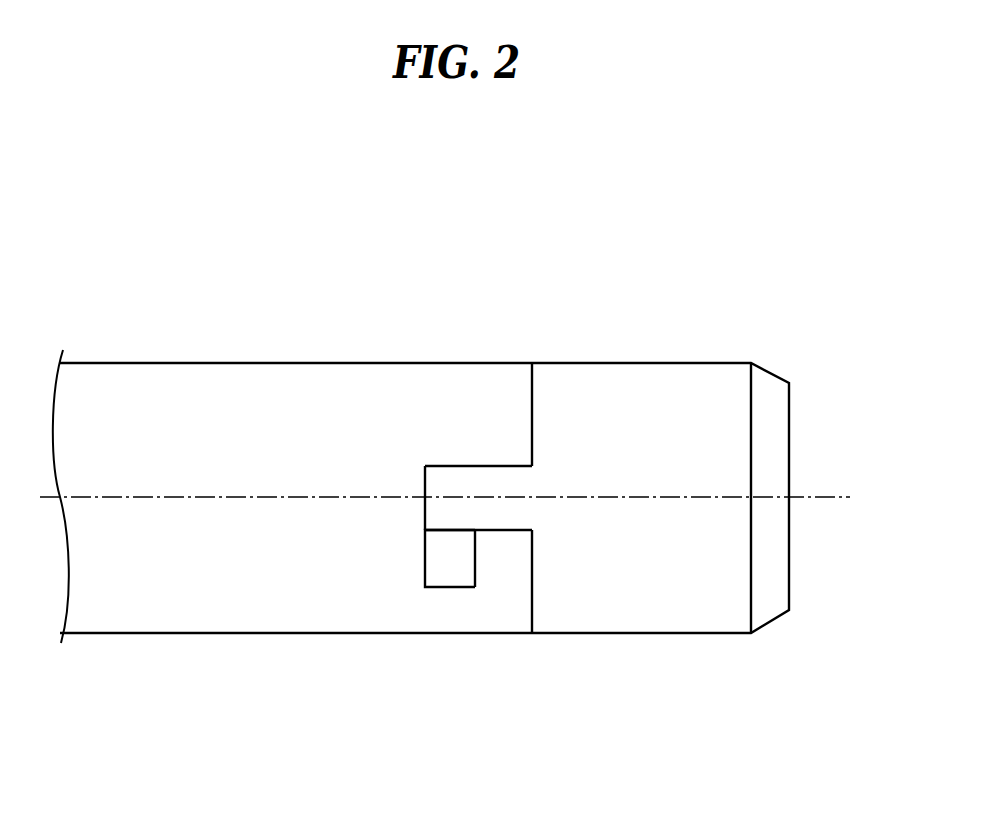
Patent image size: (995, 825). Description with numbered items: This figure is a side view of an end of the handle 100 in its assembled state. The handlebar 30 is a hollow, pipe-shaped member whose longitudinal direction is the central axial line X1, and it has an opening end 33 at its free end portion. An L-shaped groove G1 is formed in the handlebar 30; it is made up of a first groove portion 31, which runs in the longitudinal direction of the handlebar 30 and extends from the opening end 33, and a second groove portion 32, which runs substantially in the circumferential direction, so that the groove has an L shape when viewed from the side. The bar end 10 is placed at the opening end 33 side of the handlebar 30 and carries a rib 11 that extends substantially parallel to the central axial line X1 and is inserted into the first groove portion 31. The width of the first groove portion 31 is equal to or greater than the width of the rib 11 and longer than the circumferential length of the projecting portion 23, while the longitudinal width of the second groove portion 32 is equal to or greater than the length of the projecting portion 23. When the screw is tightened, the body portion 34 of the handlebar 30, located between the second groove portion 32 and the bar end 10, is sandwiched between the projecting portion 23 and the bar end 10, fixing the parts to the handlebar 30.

The handle 100 is at (462, 207).
The bar end 10 is at (690, 363).
The handlebar 30 is at (304, 363).
The rib 11 is at (507, 485).
The first groove portion 31 is at (495, 528).
The second groove portion 32 is at (472, 547).
The opening end 33 is at (533, 402).
The body portion 34 is at (503, 548).
The projecting portion 23 is at (458, 562).
The L-shaped groove G1 is at (312, 512).
The central axial line X1 is at (828, 496).